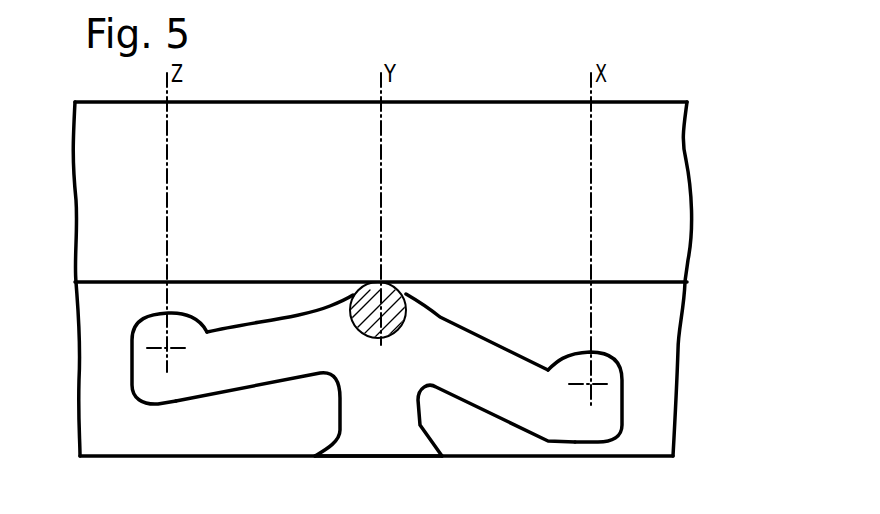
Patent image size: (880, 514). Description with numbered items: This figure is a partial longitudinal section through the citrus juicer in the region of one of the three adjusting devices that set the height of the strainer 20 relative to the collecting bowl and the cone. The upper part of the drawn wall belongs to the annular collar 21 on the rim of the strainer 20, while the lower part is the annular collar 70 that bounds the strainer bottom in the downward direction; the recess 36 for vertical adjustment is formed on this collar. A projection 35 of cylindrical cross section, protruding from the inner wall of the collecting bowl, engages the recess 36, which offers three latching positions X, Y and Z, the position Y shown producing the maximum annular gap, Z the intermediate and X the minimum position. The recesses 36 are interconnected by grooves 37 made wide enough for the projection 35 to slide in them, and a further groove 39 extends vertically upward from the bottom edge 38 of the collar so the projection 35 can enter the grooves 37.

The strainer 20 is at (700, 258).
The annular collar 21 is at (662, 184).
The annular collar 70 is at (660, 313).
The projection 35 is at (368, 284).
The recess 36 is at (140, 318).
The groove 37 is at (222, 378).
The bottom edge 38 is at (617, 459).
The further groove 39 is at (385, 402).